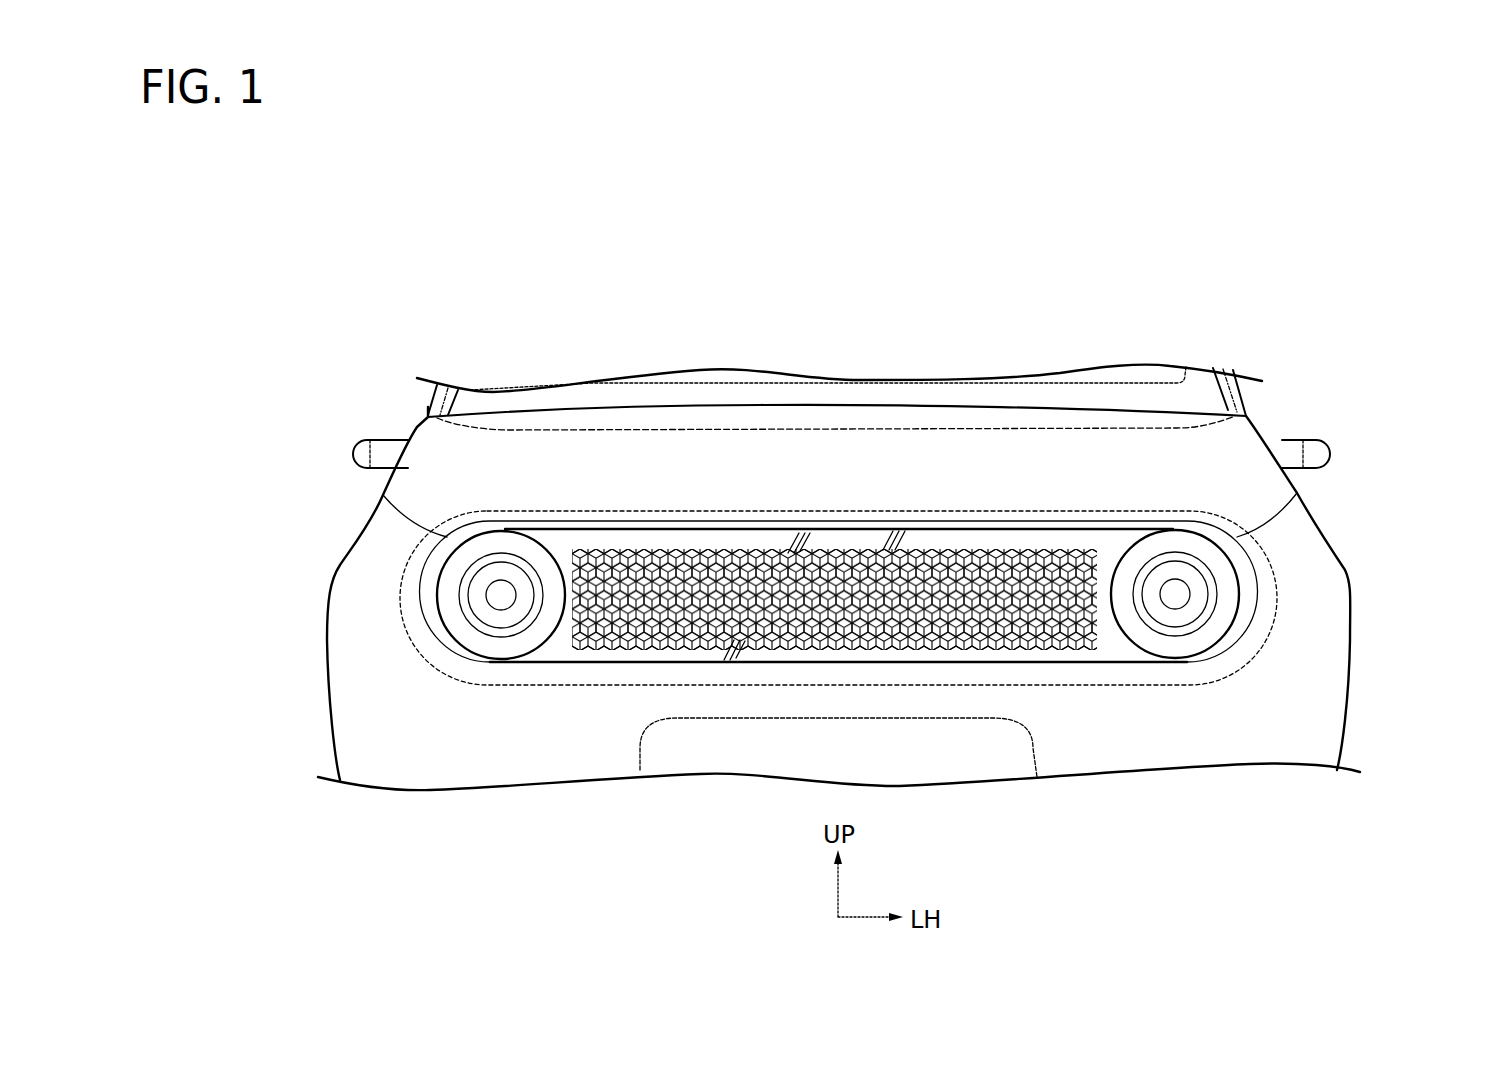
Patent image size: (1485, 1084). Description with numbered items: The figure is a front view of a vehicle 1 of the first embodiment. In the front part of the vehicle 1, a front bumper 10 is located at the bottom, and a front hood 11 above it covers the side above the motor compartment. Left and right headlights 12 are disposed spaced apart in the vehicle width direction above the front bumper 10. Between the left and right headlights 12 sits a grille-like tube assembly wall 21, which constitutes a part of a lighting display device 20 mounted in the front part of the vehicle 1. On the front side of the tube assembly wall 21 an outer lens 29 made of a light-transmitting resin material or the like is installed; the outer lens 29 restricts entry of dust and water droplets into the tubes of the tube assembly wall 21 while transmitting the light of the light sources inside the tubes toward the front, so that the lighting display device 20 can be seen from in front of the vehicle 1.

The vehicle 1 is at (1152, 308).
The front bumper 10 is at (1122, 735).
The front hood 11 is at (668, 437).
The headlights 12 is at (458, 608).
The lighting display device 20 is at (657, 664).
The tube assembly wall 21 is at (925, 550).
The outer lens 29 is at (786, 544).